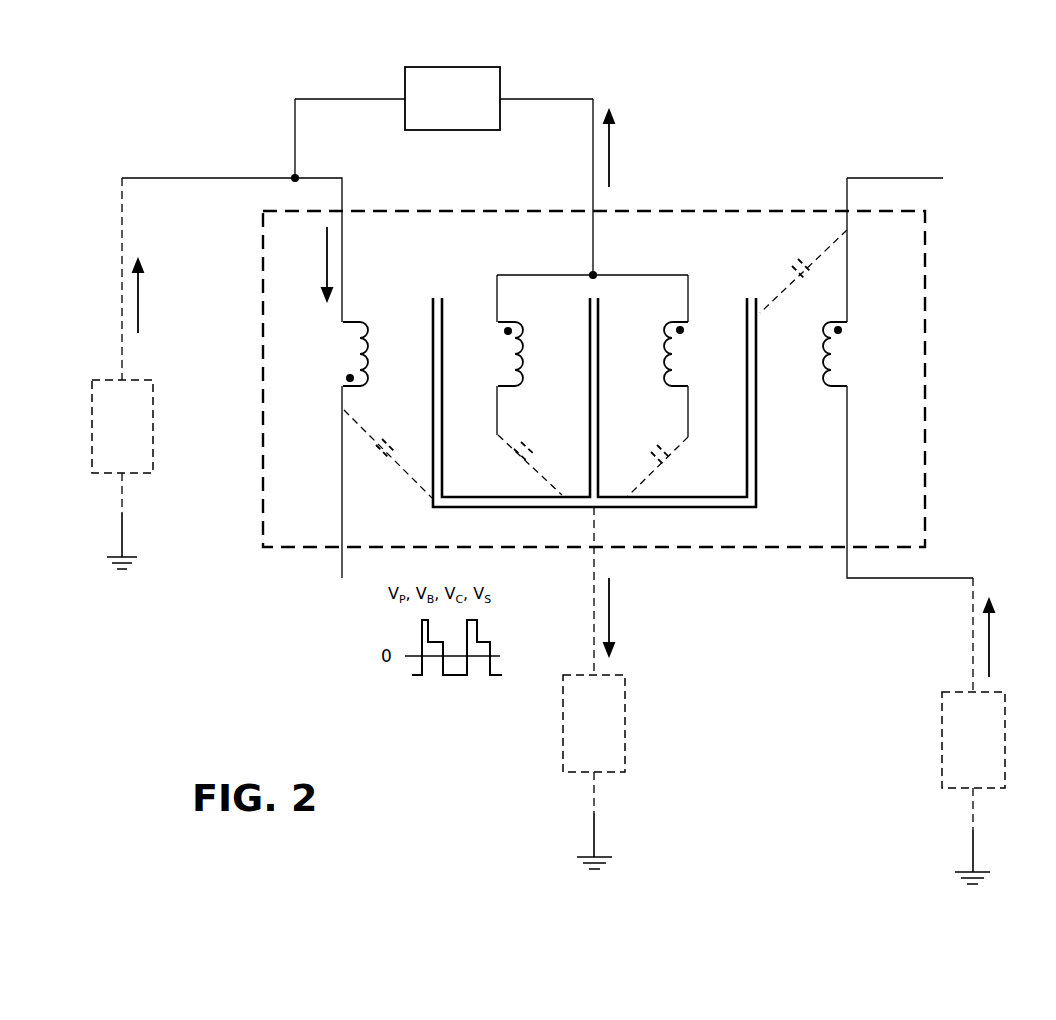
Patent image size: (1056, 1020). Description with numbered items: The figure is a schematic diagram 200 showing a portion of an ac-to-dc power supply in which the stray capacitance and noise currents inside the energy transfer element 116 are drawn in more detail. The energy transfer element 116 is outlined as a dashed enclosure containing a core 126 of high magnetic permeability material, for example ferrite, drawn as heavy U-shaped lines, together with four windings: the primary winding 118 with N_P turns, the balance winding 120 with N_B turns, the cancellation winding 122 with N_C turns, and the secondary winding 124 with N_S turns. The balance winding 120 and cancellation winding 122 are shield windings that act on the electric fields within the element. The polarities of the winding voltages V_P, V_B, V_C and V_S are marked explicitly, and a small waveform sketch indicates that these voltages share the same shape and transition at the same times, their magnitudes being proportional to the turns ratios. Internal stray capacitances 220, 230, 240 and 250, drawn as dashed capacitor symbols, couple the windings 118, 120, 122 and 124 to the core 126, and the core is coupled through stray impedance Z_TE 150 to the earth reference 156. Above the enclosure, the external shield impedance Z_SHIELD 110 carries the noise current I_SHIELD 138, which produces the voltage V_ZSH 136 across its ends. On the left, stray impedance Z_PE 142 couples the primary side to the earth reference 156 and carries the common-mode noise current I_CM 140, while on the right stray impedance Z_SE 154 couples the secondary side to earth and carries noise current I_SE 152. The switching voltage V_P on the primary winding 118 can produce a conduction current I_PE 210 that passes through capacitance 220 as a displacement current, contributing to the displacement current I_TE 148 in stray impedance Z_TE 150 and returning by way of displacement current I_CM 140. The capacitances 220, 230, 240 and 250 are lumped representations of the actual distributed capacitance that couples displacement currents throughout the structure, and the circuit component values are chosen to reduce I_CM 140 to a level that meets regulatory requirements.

The external shield impedance 110 is at (467, 120).
The energy transfer element 116 is at (502, 209).
The primary winding 118 is at (353, 311).
The balance winding 120 is at (490, 318).
The cancellation winding 122 is at (698, 320).
The secondary winding 124 is at (835, 398).
The core 126 is at (503, 510).
The voltage V_ZSH 136 is at (483, 45).
The noise current I_SHIELD 138 is at (622, 128).
The noise current I_CM 140 is at (148, 285).
The stray impedance Z_PE 142 is at (138, 446).
The noise current I_TE 148 is at (622, 605).
The stray impedance Z_TE 150 is at (609, 743).
The noise current I_SE 152 is at (1000, 620).
The stray impedance Z_SE 154 is at (989, 760).
The earth reference 156 is at (145, 566).
The schematic diagram 200 is at (278, 667).
The conduction current I_PE 210 is at (318, 277).
The internal stray capacitance 220 is at (390, 473).
The internal stray capacitance 230 is at (508, 463).
The internal stray capacitance 240 is at (676, 460).
The internal stray capacitance 250 is at (806, 255).